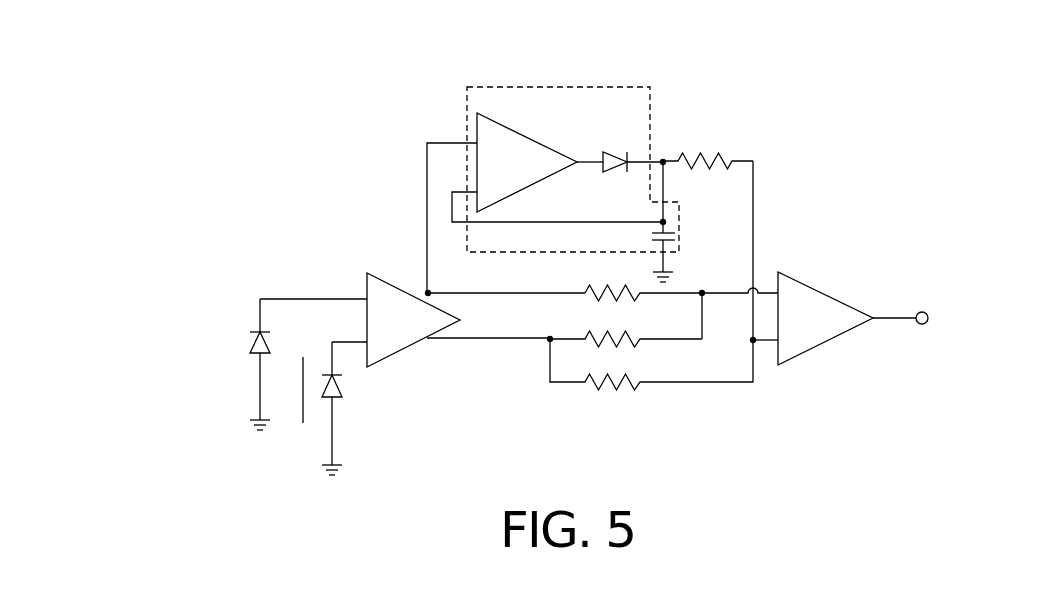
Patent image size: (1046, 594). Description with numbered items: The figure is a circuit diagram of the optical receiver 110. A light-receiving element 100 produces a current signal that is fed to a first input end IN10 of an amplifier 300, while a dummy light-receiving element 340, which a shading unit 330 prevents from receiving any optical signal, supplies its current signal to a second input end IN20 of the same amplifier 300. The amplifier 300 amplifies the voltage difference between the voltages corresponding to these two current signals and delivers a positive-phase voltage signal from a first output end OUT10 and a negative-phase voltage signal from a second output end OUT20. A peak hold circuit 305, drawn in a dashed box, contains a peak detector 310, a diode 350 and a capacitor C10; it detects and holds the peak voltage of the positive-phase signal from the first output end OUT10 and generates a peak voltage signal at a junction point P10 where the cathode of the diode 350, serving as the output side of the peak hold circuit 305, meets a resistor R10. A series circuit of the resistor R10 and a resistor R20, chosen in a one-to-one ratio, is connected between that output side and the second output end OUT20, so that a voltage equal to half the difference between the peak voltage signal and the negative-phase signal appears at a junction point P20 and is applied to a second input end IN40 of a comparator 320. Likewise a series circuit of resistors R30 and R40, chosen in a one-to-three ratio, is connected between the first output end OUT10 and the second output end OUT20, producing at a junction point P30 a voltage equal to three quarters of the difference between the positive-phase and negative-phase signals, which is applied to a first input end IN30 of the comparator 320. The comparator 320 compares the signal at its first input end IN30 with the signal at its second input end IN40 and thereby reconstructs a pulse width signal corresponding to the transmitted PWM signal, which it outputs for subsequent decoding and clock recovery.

The optical receiver 110 is at (545, 476).
The light-receiving element 100 is at (250, 345).
The amplifier 300 is at (410, 362).
The peak hold circuit 305 is at (518, 87).
The peak detector 310 is at (520, 130).
The comparator 320 is at (830, 346).
The shading unit 330 is at (302, 424).
The dummy light-receiving element 340 is at (338, 403).
The diode 350 is at (616, 150).
The first input end IN10 is at (367, 296).
The second input end IN20 is at (367, 340).
The first input end IN30 is at (772, 290).
The second input end IN40 is at (775, 343).
The first output end OUT10 is at (438, 298).
The second output end OUT20 is at (430, 345).
The junction point P10 is at (665, 165).
The junction point P20 is at (751, 338).
The junction point P30 is at (704, 290).
The resistor R10 is at (700, 150).
The resistor R20 is at (620, 388).
The resistor R30 is at (592, 287).
The resistor R40 is at (620, 345).
The capacitor C10 is at (652, 236).